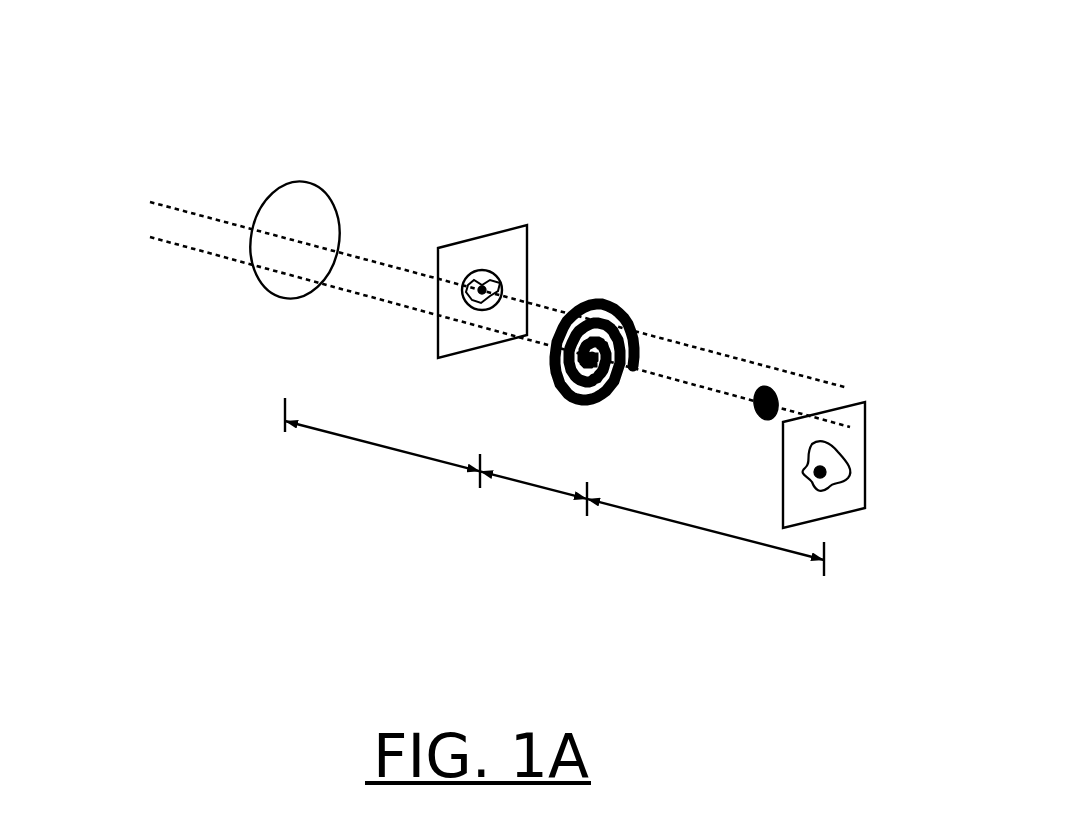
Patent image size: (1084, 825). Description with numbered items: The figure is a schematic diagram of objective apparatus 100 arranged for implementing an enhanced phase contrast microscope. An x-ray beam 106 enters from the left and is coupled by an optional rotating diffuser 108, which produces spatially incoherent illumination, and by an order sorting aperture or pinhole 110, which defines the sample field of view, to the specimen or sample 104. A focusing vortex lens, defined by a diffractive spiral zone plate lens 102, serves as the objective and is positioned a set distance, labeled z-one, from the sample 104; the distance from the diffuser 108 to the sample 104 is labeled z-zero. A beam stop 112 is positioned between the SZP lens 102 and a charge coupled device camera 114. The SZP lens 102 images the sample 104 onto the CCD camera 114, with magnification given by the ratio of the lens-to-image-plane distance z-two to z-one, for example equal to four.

The objective apparatus 100 is at (460, 68).
The spiral zone plate lens 102 is at (581, 305).
The sample 104 is at (471, 278).
The x-ray beam 106 is at (462, 302).
The rotating diffuser 108 is at (337, 205).
The pinhole 110 is at (462, 283).
The beam stop 112 is at (752, 398).
The CCD camera 114 is at (865, 436).